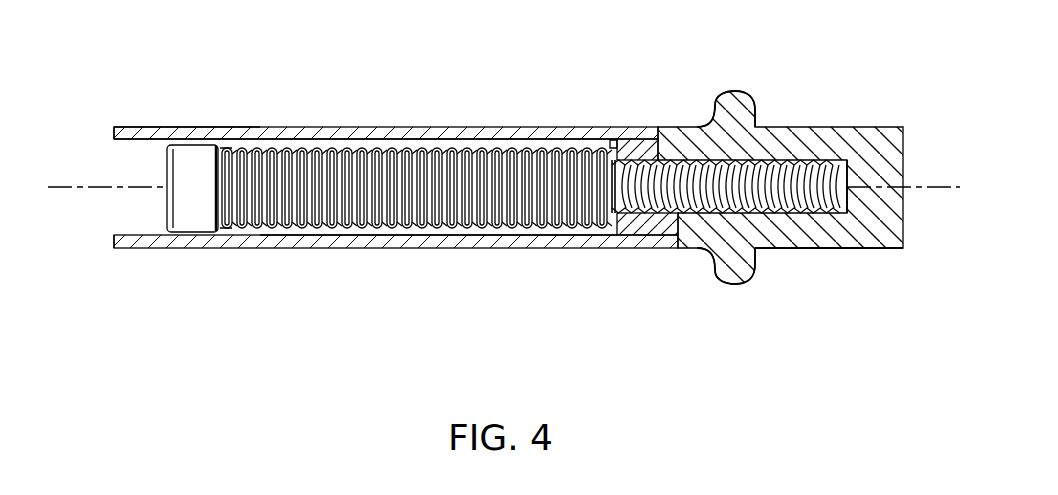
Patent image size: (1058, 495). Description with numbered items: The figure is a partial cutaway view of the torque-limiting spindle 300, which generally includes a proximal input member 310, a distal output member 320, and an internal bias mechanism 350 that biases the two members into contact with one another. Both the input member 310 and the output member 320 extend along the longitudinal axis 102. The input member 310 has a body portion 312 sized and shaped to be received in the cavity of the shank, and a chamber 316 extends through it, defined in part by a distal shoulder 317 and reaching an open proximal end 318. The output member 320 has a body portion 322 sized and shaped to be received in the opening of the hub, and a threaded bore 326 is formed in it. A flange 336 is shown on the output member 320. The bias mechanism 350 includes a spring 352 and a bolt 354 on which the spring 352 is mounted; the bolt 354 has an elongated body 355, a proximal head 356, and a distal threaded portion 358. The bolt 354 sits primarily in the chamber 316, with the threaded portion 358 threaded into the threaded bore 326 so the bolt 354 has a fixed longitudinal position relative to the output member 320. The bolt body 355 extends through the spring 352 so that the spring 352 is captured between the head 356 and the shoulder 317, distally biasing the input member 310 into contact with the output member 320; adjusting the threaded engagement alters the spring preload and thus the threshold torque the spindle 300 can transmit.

The torque-limiting spindle 300 is at (222, 63).
The proximal input member 310 is at (312, 127).
The body portion 312 is at (202, 127).
The chamber 316 is at (397, 152).
The distal shoulder 317 is at (606, 139).
The open proximal end 318 is at (98, 174).
The distal output member 320 is at (803, 127).
The body portion 322 is at (820, 248).
The threaded bore 326 is at (857, 159).
The flange 336 is at (666, 104).
The longitudinal axis 102 is at (923, 187).
The internal bias mechanism 350 is at (320, 248).
The spring 352 is at (453, 213).
The bolt 354 is at (156, 215).
The elongated body 355 is at (383, 207).
The proximal head 356 is at (203, 218).
The distal threaded portion 358 is at (698, 214).